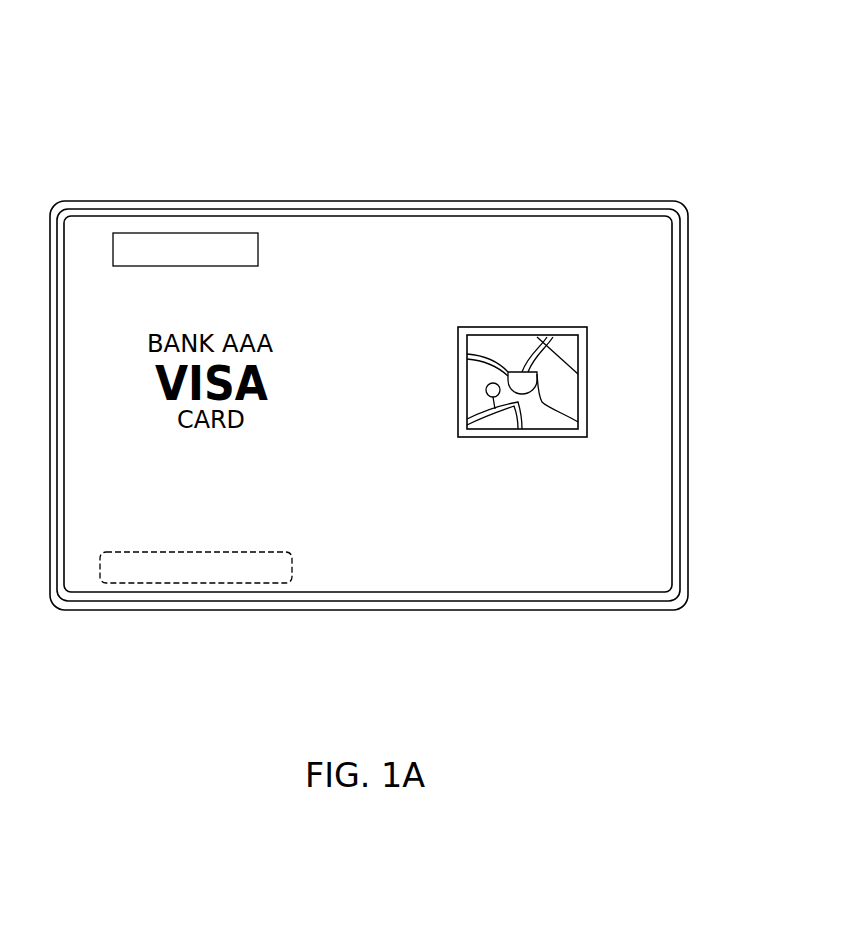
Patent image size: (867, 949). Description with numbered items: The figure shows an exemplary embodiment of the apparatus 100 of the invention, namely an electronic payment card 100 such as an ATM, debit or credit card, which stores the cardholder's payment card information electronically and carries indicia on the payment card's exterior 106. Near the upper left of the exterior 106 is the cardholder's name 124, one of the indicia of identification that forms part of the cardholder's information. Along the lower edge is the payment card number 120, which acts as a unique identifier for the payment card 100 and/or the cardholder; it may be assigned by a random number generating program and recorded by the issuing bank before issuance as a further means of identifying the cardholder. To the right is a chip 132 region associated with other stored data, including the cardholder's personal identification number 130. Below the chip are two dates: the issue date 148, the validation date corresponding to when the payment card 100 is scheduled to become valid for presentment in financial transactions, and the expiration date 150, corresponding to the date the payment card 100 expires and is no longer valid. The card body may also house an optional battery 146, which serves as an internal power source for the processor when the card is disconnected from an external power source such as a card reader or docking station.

The payment card 100 is at (202, 124).
The payment card's exterior 106 is at (622, 475).
The payment card number 120 is at (168, 582).
The cardholder's name 124 is at (141, 233).
The cardholder's personal identification number 130 is at (605, 382).
The chip 132 is at (565, 404).
The battery 146 is at (505, 201).
The issue date 148 is at (455, 573).
The expiration date 150 is at (615, 573).